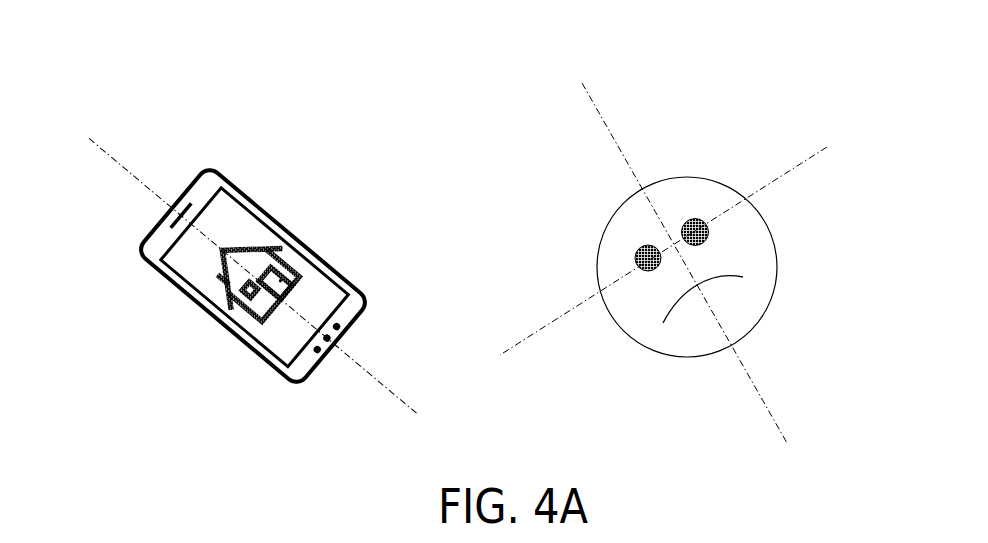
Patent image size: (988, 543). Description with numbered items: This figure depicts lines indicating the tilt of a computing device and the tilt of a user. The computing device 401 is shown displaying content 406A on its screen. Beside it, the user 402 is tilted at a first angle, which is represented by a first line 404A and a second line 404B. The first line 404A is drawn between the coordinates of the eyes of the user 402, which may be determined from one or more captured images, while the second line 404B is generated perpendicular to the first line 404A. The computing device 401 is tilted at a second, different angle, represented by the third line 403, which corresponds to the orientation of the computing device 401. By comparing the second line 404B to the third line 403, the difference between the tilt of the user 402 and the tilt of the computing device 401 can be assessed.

The computing device 401 is at (242, 353).
The user 402 is at (625, 337).
The third line 403 is at (88, 140).
The first line 404A is at (827, 147).
The second line 404B is at (582, 83).
The content 406A is at (288, 252).